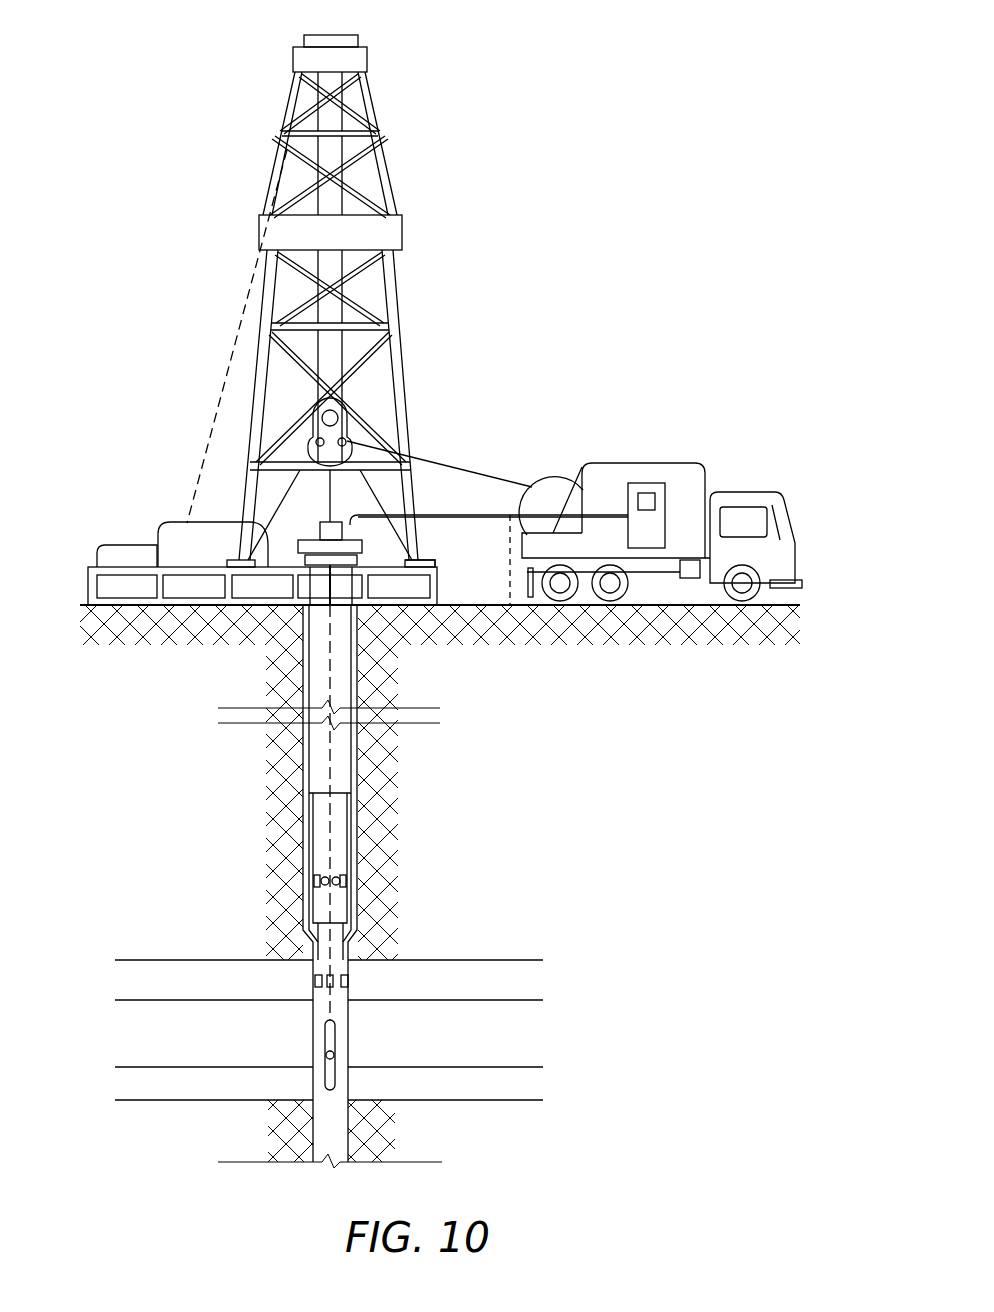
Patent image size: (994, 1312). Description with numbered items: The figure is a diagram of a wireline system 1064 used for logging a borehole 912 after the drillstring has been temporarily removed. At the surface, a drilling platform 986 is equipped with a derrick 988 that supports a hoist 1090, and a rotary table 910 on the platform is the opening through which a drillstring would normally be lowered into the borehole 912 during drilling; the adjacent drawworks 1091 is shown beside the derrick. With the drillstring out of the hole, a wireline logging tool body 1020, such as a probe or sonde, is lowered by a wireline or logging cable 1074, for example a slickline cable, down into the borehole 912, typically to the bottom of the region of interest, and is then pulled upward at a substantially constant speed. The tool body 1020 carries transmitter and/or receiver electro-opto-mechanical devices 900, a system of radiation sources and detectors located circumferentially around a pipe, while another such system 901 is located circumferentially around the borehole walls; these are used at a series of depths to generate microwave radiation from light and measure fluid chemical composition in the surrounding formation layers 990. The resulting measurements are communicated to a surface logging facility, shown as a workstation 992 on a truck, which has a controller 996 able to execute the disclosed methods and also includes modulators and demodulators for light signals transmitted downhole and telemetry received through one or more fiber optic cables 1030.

The wireline system 1064 is at (574, 206).
The hoist 1090 is at (352, 413).
The wireline or logging cable 1074 is at (452, 462).
The drawworks 1091 is at (318, 528).
The rotary table 910 is at (362, 540).
The derrick 988 is at (425, 562).
The drilling platform 986 is at (440, 587).
The fiber optic cables 1030 is at (510, 607).
The workstation 992 is at (668, 480).
The controller 996 is at (643, 492).
The borehole 912 is at (317, 963).
The transmitter and/or receiver electro-opto-mechanical devices 900 is at (347, 882).
The system of radiation sources and radiation detectors 901 is at (350, 976).
The wireline logging tool body 1020 is at (336, 1025).
The formation layers 990 is at (553, 960).